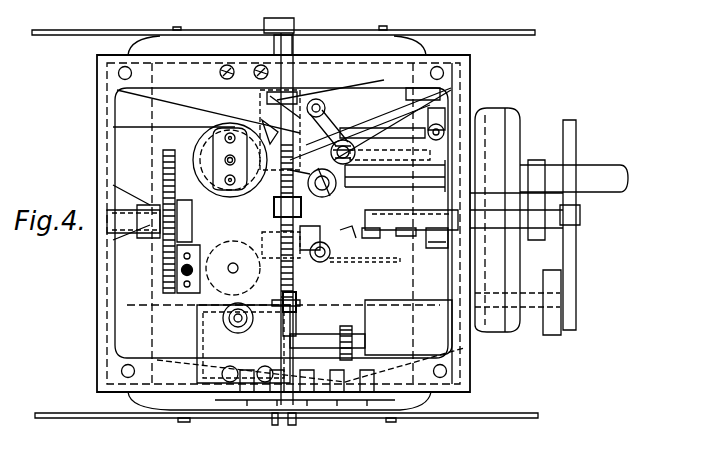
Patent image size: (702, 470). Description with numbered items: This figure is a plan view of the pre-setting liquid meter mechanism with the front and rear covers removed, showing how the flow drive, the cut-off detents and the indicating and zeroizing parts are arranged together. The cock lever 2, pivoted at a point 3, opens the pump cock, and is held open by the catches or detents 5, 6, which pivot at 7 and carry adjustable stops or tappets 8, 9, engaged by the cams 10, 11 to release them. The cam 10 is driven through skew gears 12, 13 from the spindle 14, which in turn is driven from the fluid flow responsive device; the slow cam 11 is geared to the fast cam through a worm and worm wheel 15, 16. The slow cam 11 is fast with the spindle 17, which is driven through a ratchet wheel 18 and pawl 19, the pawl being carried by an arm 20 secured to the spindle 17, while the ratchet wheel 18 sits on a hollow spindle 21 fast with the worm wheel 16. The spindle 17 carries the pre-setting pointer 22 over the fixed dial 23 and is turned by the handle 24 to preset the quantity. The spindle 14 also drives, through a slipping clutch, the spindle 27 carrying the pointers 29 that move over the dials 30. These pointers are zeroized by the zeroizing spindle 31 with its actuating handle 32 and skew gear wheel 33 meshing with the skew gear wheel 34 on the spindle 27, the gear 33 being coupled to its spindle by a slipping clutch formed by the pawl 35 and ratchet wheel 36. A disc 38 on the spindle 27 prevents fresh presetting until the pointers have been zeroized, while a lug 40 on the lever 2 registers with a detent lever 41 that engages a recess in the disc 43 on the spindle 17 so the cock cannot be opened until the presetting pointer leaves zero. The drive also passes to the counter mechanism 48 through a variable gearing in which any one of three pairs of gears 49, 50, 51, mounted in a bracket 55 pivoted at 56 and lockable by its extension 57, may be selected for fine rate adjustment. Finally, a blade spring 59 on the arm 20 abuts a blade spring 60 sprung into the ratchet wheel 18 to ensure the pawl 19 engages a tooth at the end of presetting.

The cock lever 2 is at (428, 124).
The pivot point 3 is at (316, 192).
The catch or detent 5 is at (378, 152).
The catch or detent 6 is at (382, 188).
The detent pivot 7 is at (430, 212).
The adjustable stop or tappet 8 is at (296, 118).
The adjustable stop or tappet 9 is at (330, 254).
The cam 10 is at (280, 104).
The cam 11 is at (322, 236).
The skew gear 12 is at (266, 128).
The skew gear 13 is at (205, 192).
The spindle 14 is at (268, 100).
The worm 15 is at (274, 236).
The worm wheel 16 is at (274, 206).
The spindle 17 is at (350, 234).
The ratchet wheel 18 is at (176, 282).
The pawl 19 is at (170, 262).
The arm 20 is at (170, 246).
The hollow spindle 21 is at (208, 220).
The pre-setting pointer 22 is at (524, 165).
The fixed dial 23 is at (488, 118).
The handle 24 is at (566, 130).
The spindle 27 is at (300, 338).
The pointers 29 is at (476, 36).
The dials 30 is at (76, 36).
The zeroizing spindle 31 is at (386, 308).
The actuating handle 32 is at (550, 335).
The skew gear wheel 33 is at (298, 322).
The skew gear wheel 34 is at (250, 324).
The pawl 35 is at (310, 302).
The ratchet wheel 36 is at (298, 298).
The disc 38 is at (240, 276).
The lug 40 is at (352, 248).
The detent lever 41 is at (406, 236).
The disc 43 is at (440, 250).
The counter mechanism 48 is at (306, 420).
The pair of gears 49 is at (376, 238).
The pair of gears 50 is at (340, 146).
The pair of gears 51 is at (322, 100).
The bracket 55 is at (350, 120).
The bracket pivot 56 is at (385, 128).
The extension 57 is at (410, 92).
The blade spring 59 is at (160, 206).
The blade spring 60 is at (158, 198).